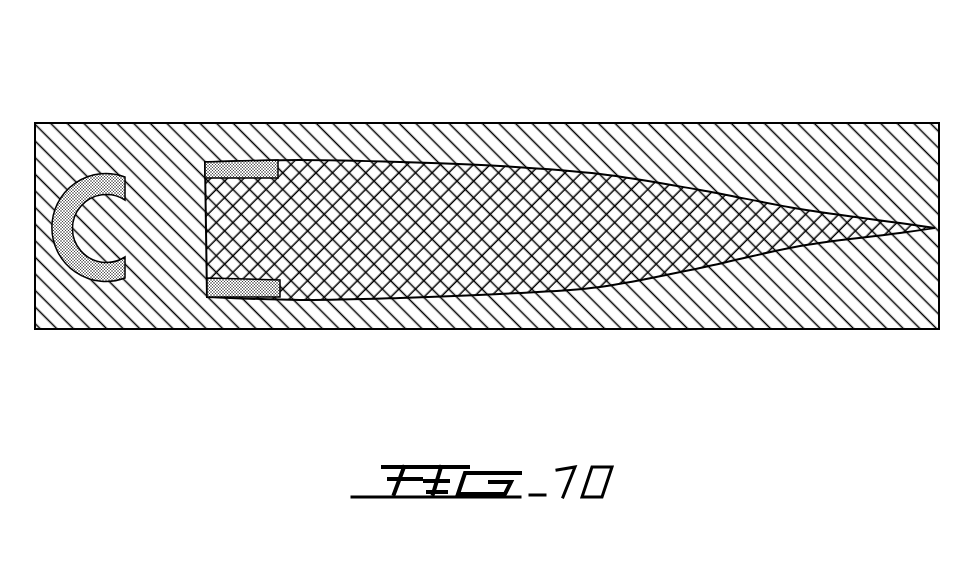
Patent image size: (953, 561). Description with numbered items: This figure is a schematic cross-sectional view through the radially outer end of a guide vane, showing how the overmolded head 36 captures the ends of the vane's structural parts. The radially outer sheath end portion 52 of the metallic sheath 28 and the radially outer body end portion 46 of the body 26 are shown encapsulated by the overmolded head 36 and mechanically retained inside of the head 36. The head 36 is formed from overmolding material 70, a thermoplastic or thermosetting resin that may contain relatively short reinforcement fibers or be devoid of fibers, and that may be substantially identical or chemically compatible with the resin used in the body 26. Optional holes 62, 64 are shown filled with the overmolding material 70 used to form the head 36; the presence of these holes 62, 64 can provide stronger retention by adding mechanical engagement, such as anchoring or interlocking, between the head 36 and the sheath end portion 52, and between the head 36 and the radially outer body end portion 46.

The body 26 is at (570, 230).
The radially outer body end portion 46 is at (463, 240).
The metallic sheath 28 is at (262, 187).
The radially outer sheath end portion 52 is at (257, 168).
The head 36 is at (678, 150).
The overmolding material 70 is at (487, 216).
The hole 62 is at (148, 178).
The hole 64 is at (165, 210).